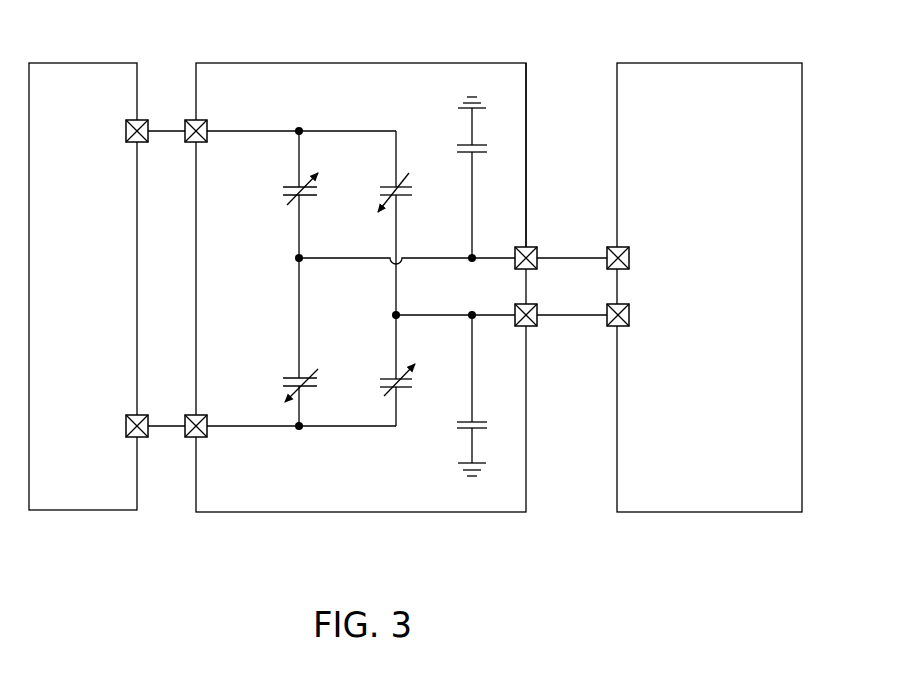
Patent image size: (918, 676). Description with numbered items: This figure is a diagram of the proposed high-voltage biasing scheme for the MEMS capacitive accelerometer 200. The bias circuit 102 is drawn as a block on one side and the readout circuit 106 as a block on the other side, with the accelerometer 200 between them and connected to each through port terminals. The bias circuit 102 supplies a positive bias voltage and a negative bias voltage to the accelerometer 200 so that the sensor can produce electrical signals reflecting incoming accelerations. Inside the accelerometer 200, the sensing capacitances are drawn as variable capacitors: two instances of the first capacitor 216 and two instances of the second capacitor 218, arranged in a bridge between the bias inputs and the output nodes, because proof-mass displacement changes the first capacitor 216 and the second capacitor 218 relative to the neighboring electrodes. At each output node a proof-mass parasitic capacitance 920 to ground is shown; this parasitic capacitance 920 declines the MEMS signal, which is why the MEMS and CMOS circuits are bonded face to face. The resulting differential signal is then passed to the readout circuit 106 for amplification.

The bias circuit 102 is at (109, 63).
The readout circuit 106 is at (787, 63).
The accelerometer 200 is at (497, 63).
The capacitor C1 216 is at (292, 185).
The capacitor C2 218 is at (388, 185).
The proof-mass parasitic capacitance Cpar 920 is at (484, 143).